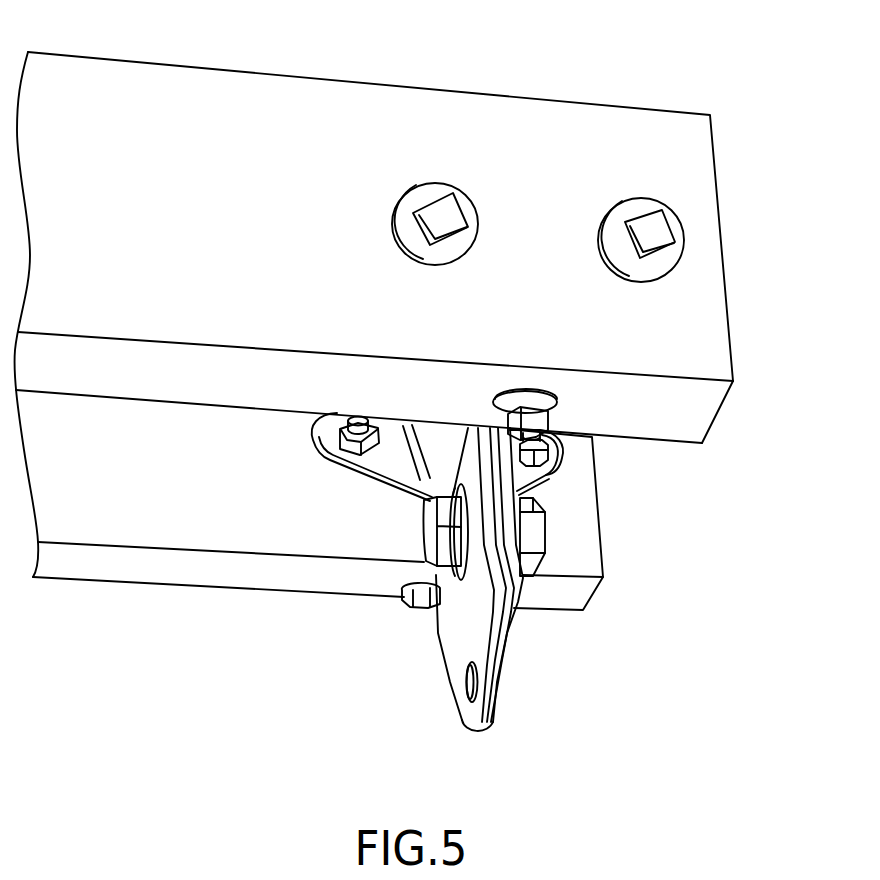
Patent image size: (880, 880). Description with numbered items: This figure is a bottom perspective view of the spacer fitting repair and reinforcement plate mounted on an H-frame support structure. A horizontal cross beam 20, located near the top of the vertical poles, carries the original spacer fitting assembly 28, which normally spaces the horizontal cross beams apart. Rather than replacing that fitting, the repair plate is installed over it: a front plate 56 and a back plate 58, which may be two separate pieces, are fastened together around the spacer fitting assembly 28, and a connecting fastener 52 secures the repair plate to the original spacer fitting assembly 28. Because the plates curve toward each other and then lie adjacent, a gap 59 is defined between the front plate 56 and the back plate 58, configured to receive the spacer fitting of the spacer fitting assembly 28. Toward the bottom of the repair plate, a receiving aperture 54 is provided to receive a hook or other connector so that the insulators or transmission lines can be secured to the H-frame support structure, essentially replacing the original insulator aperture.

The horizontal cross beam 20 is at (485, 93).
The spacer fitting assembly 28 is at (498, 467).
The connecting fastener 52 is at (535, 563).
The receiving aperture 54 is at (472, 681).
The front plate 56 is at (470, 720).
The back plate 58 is at (495, 579).
The gap 59 is at (505, 525).